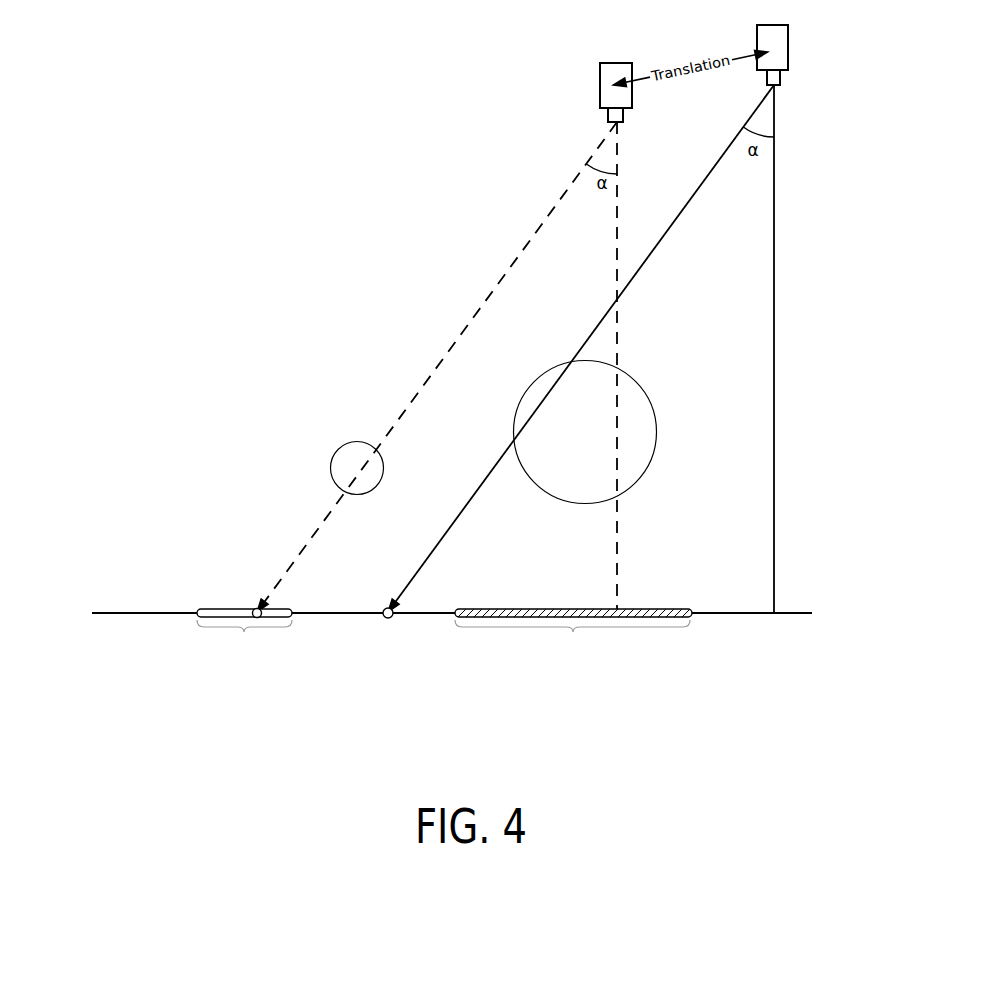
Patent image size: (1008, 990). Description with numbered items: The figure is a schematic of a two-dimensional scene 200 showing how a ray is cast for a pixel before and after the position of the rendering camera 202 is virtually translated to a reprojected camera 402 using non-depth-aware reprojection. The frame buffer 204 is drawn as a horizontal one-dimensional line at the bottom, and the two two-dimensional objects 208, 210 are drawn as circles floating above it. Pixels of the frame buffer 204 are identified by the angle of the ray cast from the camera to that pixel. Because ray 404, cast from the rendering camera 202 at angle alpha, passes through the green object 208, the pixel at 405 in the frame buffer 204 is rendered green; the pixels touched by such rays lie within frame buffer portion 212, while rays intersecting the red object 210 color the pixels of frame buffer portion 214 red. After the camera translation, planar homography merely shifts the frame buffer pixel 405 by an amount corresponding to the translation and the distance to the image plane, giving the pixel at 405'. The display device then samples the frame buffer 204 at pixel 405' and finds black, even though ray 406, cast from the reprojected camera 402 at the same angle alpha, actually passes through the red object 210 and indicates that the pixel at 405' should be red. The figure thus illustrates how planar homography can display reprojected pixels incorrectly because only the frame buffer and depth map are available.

The 2D scene 200 is at (236, 161).
The rendering camera 202 is at (632, 95).
The reprojected camera 402 is at (788, 52).
The frame buffer 204 is at (128, 613).
The 2D object 208 is at (383, 459).
The 2D object 210 is at (657, 424).
The frame buffer portion 212 is at (244, 635).
The frame buffer portion 214 is at (573, 635).
The ray 404 is at (467, 324).
The ray 406 is at (590, 335).
The pixel 405 is at (286, 638).
The pixel 405' is at (417, 636).